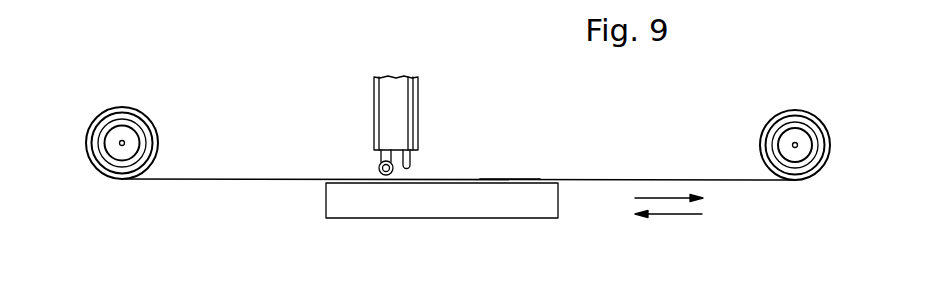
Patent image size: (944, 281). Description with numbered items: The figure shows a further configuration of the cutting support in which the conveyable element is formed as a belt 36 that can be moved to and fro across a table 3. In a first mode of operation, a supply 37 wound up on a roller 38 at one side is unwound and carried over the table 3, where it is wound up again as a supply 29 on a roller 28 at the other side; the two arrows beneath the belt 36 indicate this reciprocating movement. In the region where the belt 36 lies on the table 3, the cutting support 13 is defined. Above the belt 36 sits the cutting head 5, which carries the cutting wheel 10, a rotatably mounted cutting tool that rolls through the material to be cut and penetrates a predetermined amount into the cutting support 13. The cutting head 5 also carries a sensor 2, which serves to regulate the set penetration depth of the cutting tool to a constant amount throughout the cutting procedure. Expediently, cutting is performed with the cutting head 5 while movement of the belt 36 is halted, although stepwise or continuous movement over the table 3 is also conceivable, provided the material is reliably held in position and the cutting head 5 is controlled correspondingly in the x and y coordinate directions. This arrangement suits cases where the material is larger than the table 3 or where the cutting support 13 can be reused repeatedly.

The sensor 2 is at (411, 160).
The table 3 is at (386, 208).
The cutting head 5 is at (408, 108).
The cutting wheel 10 is at (379, 165).
The cutting support 13 is at (500, 181).
The roller 28 is at (785, 143).
The supply 29 is at (825, 127).
The belt 36 is at (617, 178).
The supply 37 is at (102, 112).
The roller 38 is at (134, 140).